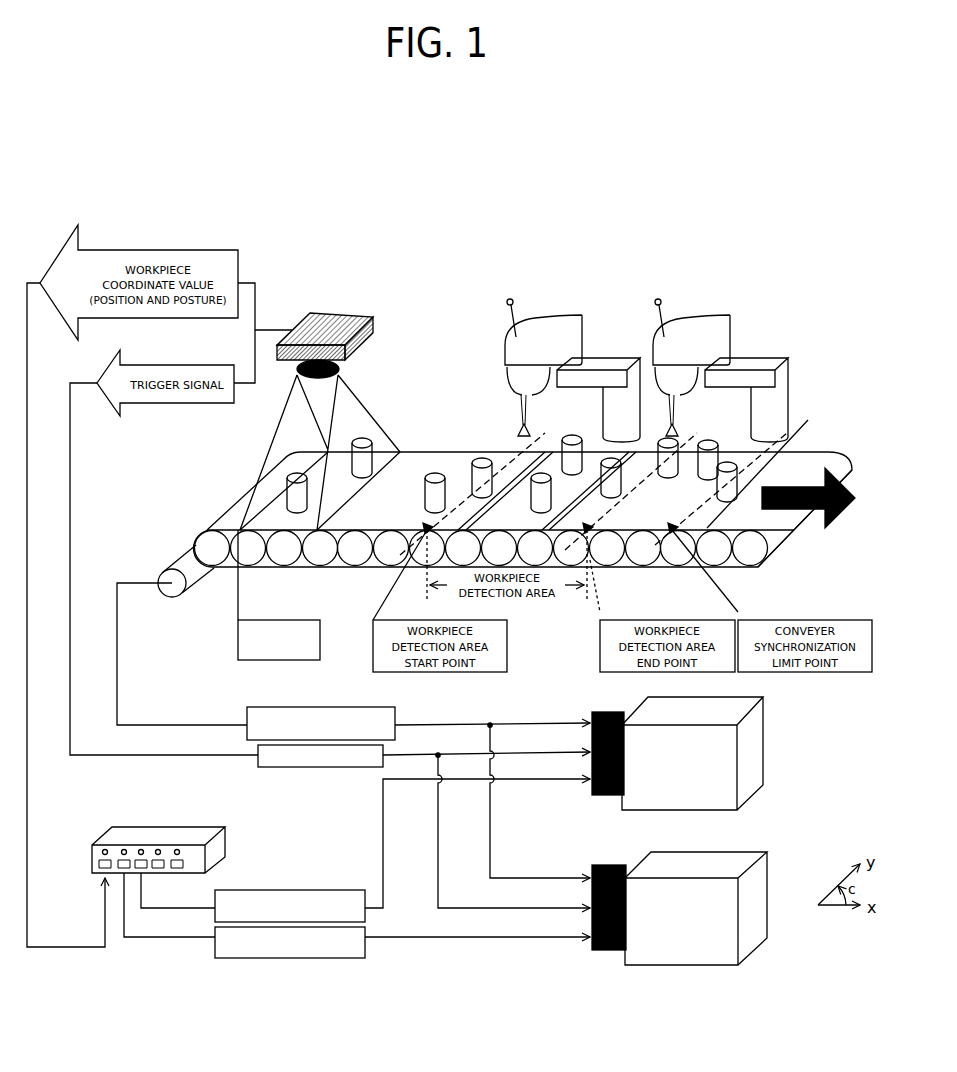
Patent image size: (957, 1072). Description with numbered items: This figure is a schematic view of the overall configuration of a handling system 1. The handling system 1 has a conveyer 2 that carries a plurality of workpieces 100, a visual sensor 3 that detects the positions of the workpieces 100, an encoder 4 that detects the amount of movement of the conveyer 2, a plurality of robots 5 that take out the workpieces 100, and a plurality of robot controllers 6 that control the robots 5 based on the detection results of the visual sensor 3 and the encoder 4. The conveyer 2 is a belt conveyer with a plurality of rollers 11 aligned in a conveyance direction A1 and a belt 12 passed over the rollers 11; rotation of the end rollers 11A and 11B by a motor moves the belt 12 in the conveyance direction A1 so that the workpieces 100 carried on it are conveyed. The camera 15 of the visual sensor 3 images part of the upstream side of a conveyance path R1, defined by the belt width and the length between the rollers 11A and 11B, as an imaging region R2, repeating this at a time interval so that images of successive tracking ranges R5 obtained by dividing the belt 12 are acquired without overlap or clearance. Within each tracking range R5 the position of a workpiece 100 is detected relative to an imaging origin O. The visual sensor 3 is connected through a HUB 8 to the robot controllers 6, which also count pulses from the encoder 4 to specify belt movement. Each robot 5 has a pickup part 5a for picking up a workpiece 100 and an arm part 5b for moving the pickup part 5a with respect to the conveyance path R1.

The handling system 1 is at (436, 1042).
The conveyer 2 is at (846, 470).
The visual sensor 3 is at (332, 312).
The encoder 4 is at (174, 597).
The robot 5 is at (712, 322).
The pickup part 5a is at (676, 400).
The arm part 5b is at (733, 340).
The robot controller 6 is at (764, 746).
The HUB 8 is at (226, 842).
The roller 11 is at (246, 557).
The roller 11A is at (752, 552).
The roller 11B is at (212, 568).
The belt 12 is at (790, 530).
The camera 15 is at (342, 364).
The workpiece 100 is at (478, 452).
The imaging origin O is at (238, 528).
The conveyance path R1 is at (832, 442).
The imaging region R2 is at (390, 457).
The tracking range R5 is at (770, 454).
The conveyance direction A1 is at (843, 516).